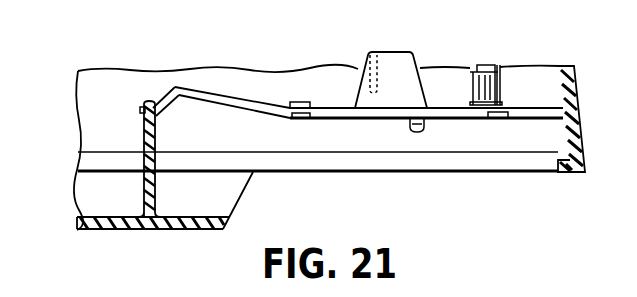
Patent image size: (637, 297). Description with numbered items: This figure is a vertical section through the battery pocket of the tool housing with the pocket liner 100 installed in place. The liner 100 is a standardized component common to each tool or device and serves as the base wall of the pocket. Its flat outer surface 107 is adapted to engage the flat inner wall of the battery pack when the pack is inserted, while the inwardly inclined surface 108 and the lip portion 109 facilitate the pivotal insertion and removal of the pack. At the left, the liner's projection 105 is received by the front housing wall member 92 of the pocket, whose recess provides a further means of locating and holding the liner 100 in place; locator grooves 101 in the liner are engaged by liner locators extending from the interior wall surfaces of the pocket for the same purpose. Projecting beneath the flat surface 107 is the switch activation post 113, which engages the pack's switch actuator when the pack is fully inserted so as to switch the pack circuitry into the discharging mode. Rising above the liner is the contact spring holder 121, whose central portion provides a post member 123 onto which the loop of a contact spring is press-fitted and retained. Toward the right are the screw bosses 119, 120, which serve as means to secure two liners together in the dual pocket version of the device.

The pocket liner 100 is at (308, 121).
The front housing wall member 92 is at (155, 192).
The projection 105 is at (142, 112).
The lip portion 109 is at (167, 104).
The inwardly inclined surface 108 is at (242, 110).
The flat outer surface 107 is at (533, 118).
The locator grooves 101 is at (307, 118).
The switch activation post 113 is at (417, 132).
The contact spring holder 121 is at (393, 52).
The post member 123 is at (367, 62).
The screw boss 120 is at (503, 67).
The screw boss 119 is at (495, 88).